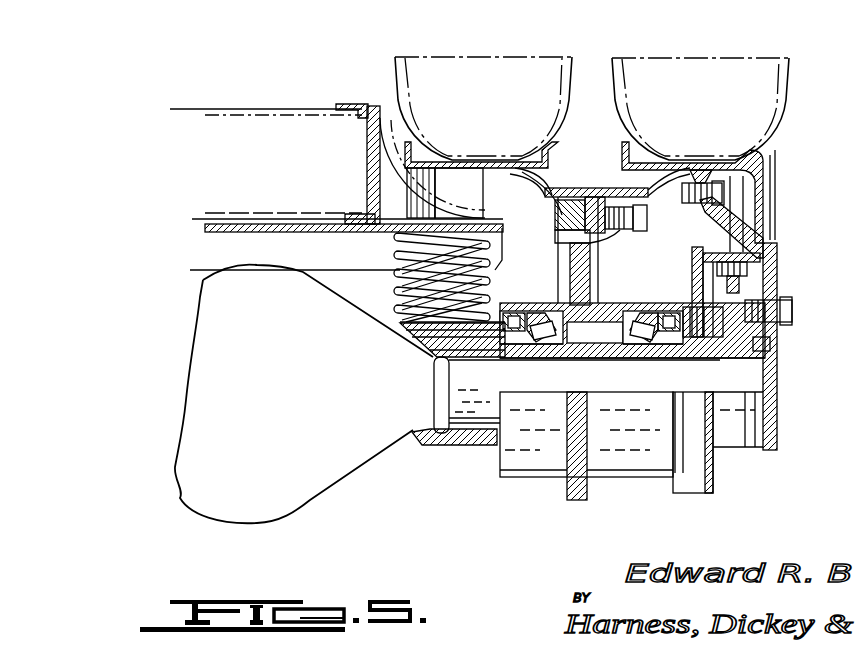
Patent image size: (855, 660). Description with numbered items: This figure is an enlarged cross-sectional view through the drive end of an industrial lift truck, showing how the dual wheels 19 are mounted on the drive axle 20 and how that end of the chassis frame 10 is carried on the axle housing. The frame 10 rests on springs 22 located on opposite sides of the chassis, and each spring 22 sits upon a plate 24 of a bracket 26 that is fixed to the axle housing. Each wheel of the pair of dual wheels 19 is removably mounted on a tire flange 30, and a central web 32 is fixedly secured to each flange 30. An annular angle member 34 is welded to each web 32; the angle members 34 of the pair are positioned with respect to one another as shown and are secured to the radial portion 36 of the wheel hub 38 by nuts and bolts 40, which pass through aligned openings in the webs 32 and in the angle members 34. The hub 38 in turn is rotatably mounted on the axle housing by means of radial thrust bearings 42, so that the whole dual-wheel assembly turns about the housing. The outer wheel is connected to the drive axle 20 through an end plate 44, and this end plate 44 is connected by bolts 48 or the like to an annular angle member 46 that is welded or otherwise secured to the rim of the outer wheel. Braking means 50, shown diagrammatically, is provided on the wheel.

The chassis frame 10 is at (376, 99).
The dual wheels 19 is at (640, 62).
The drive axle 20 is at (473, 418).
The springs 22 is at (489, 276).
The plates 24 is at (405, 319).
The brackets 26 is at (432, 340).
The tire flange 30 is at (472, 154).
The central web 32 is at (537, 195).
The annular angle member 34 is at (604, 188).
The radial portion 36 is at (588, 280).
The wheel hub 38 is at (622, 312).
The nuts and bolts 40 is at (620, 243).
The radial thrust bearings 42 is at (637, 340).
The end plate 44 is at (780, 372).
The annular angle member 46 is at (703, 175).
The bolts 48 is at (722, 193).
The braking means 50 is at (778, 279).